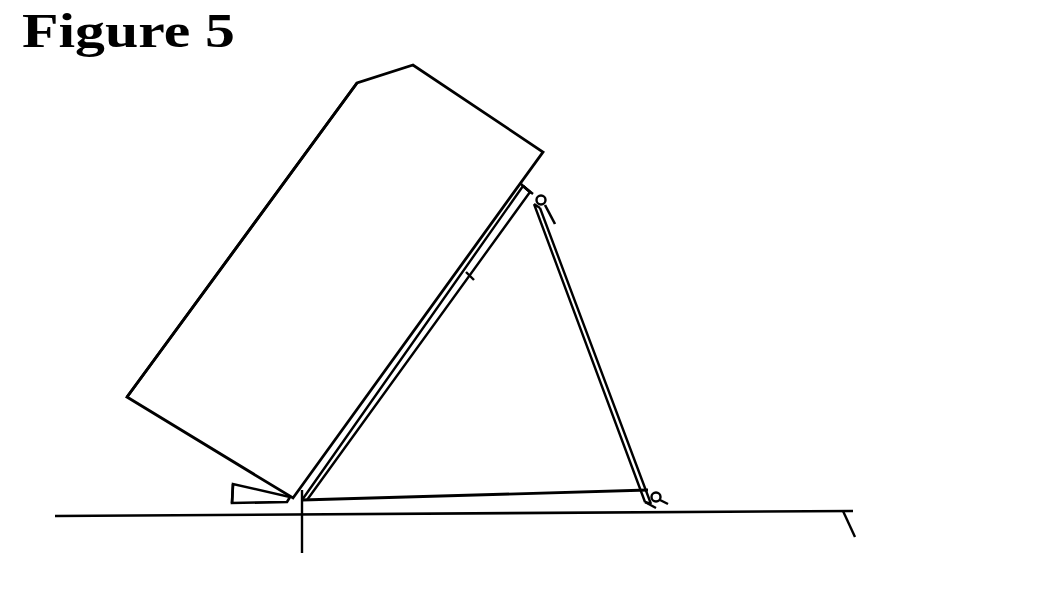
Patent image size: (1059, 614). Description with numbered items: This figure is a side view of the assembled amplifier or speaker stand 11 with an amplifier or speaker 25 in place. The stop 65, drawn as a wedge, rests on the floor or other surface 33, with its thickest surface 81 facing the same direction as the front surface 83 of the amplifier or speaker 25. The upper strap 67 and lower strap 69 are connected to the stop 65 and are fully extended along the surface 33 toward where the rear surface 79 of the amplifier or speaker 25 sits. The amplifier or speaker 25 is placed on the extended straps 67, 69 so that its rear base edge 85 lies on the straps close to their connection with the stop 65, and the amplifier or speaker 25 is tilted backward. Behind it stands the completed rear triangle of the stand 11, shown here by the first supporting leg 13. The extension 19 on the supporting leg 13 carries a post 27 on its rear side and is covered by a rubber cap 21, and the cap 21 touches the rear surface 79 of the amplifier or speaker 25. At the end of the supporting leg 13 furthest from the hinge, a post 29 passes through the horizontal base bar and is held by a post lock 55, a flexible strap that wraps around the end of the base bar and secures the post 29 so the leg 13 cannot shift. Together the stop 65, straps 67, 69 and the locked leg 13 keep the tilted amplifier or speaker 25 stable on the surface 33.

The amplifier or speaker stand 11 is at (668, 326).
The first supporting leg 13 is at (585, 325).
The extension 19 is at (530, 212).
The cap 21 is at (525, 185).
The amplifier or speaker 25 is at (240, 290).
The post 27 is at (547, 196).
The post 29 is at (663, 487).
The floor or other surface 33 is at (464, 549).
The post lock 55 is at (657, 508).
The stop 65 is at (248, 505).
The upper strap 67 is at (440, 327).
The lower strap 69 is at (490, 497).
The rear surface 79 is at (470, 282).
The thickest surface 81 is at (232, 493).
The front surface 83 is at (283, 178).
The rear base edge 85 is at (301, 542).